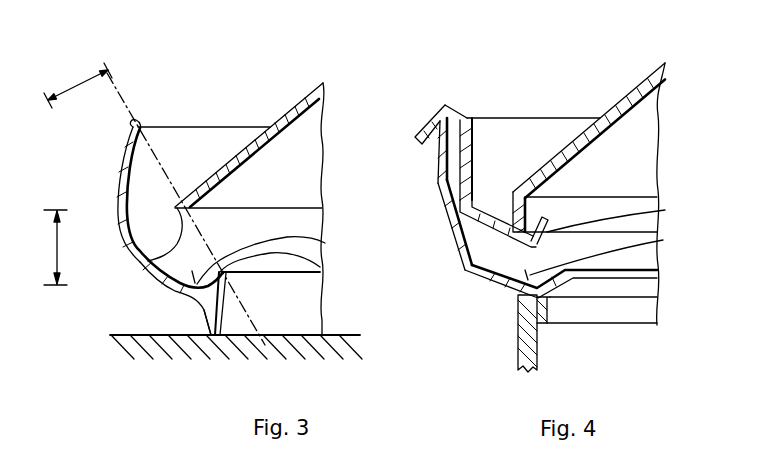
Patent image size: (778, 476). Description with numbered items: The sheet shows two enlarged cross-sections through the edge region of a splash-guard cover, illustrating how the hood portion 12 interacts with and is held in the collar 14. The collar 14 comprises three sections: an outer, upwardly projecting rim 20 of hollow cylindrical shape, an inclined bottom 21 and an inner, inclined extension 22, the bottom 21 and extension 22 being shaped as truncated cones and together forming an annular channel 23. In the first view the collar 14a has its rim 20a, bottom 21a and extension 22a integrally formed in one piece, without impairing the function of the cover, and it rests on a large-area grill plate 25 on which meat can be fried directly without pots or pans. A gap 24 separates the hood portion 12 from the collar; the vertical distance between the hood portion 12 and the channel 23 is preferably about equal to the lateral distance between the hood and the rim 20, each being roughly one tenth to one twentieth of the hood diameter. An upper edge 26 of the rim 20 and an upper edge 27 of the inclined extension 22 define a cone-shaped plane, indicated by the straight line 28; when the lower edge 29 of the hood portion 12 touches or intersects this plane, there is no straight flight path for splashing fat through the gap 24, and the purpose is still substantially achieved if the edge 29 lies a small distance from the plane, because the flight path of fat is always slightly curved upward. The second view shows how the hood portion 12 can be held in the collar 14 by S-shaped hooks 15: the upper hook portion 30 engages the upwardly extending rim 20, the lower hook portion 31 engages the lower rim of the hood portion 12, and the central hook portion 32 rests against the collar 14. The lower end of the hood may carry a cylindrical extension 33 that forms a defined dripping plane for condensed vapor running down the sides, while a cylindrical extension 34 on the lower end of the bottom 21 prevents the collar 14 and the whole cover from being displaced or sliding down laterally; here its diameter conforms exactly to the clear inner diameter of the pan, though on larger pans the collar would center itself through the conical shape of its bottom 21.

In FIG. 3, the hood portion 12 is at (300, 110).
In FIG. 4, the hood portion 12 is at (627, 97).
In FIG. 4, the collar 14 is at (426, 184).
In FIG. 3, the collar 14a is at (100, 165).
In FIG. 4, the S-shaped hook 15 is at (473, 152).
In FIG. 4, the upwardly projecting rim 20 is at (442, 208).
In FIG. 3, the upwardly projecting rim 20a is at (123, 191).
In FIG. 4, the inclined bottom 21 is at (500, 293).
In FIG. 3, the inclined bottom 21a is at (210, 302).
In FIG. 4, the inclined extension 22 is at (565, 285).
In FIG. 3, the inclined extension 22a is at (226, 275).
In FIG. 3, the annular channel 23 is at (275, 257).
In FIG. 4, the annular channel 23 is at (608, 255).
In FIG. 3, the gap 24 is at (143, 186).
In FIG. 3, the grill plate 25 is at (293, 345).
In FIG. 3, the upper edge 26 is at (136, 122).
In FIG. 3, the upper edge 27 is at (321, 268).
In FIG. 3, the straight line 28 is at (110, 74).
In FIG. 3, the lower edge 29 is at (143, 267).
In FIG. 4, the upper hook portion 30 is at (435, 115).
In FIG. 4, the lower hook portion 31 is at (619, 215).
In FIG. 4, the central hook portion 32 is at (458, 239).
In FIG. 4, the cylindrical extension 33 is at (498, 205).
In FIG. 4, the cylindrical extension 34 is at (558, 308).